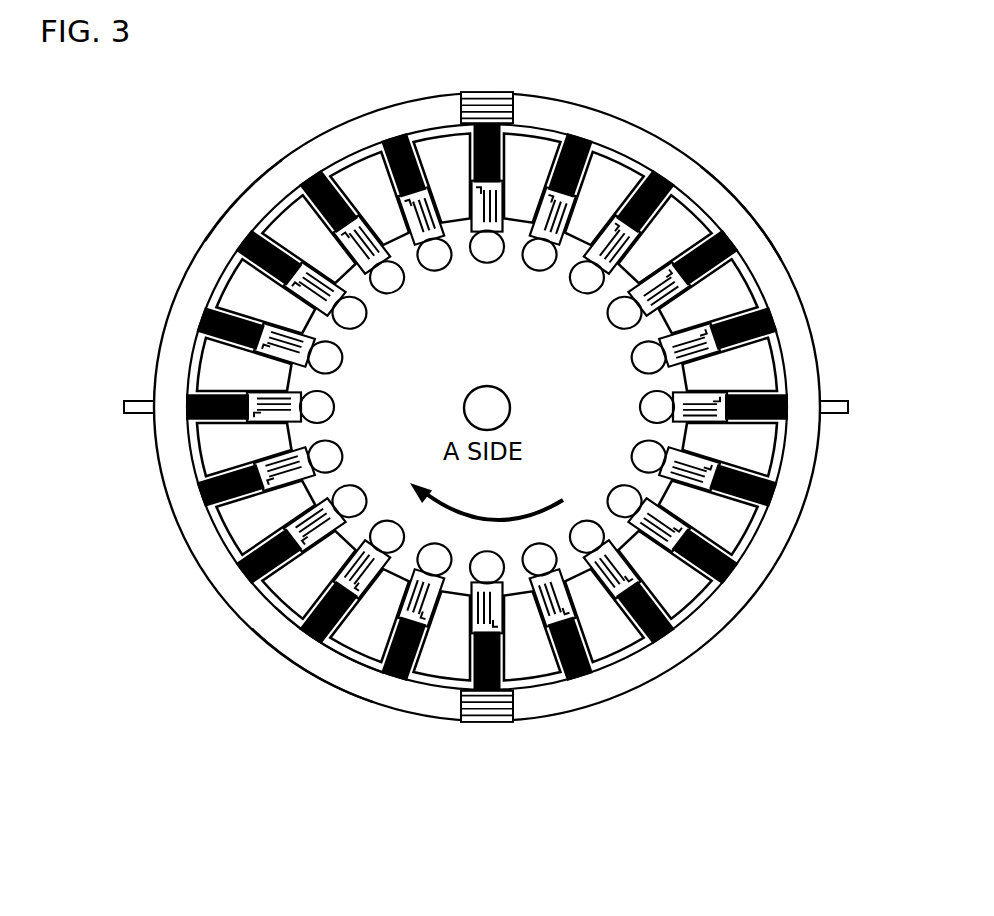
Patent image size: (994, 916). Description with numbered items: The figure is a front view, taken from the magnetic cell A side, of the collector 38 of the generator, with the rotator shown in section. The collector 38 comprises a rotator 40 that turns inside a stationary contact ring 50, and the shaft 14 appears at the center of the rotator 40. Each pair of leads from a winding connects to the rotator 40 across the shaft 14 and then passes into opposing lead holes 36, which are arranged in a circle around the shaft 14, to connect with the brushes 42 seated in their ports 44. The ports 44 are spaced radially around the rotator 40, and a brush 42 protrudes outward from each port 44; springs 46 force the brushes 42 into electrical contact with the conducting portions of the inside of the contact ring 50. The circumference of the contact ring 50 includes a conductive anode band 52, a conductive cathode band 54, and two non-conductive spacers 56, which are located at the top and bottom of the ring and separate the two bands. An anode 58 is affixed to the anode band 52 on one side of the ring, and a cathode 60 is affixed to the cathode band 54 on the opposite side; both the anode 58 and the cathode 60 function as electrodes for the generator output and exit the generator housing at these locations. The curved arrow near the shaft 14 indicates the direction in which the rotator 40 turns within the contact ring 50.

The shaft 14 is at (512, 393).
The lead holes 36 is at (400, 288).
The collector 38 is at (312, 114).
The rotator 40 is at (289, 590).
The brushes 42 is at (675, 181).
The ports 44 is at (588, 644).
The springs 46 is at (273, 325).
The contact ring 50 is at (341, 680).
The anode band 52 is at (792, 258).
The cathode band 54 is at (208, 223).
The non-conductive spacers 56 is at (491, 92).
The anode 58 is at (852, 408).
The cathode 60 is at (116, 407).